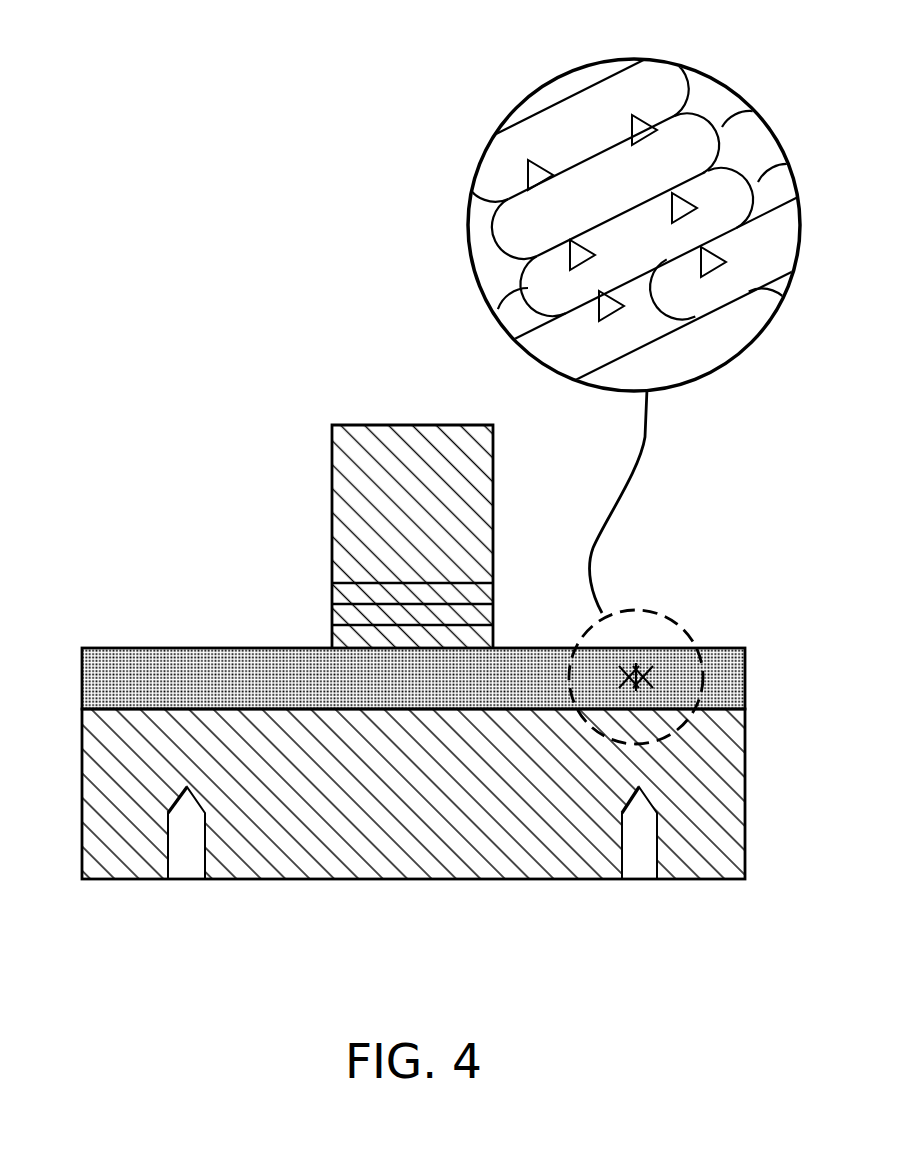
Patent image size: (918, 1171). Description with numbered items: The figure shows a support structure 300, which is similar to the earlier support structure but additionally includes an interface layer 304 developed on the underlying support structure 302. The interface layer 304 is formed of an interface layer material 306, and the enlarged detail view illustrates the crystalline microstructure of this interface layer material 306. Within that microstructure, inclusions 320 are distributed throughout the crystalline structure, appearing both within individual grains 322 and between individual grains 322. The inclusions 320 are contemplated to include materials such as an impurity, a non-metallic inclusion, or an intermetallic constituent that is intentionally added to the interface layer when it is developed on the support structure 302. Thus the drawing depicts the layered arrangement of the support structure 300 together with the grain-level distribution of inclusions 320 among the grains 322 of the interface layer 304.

The support structure 300 is at (176, 969).
The support structure 302 is at (400, 850).
The interface layer 304 is at (210, 668).
The interface layer material 306 is at (636, 670).
The inclusions 320 is at (582, 255).
The grains 322 is at (515, 220).